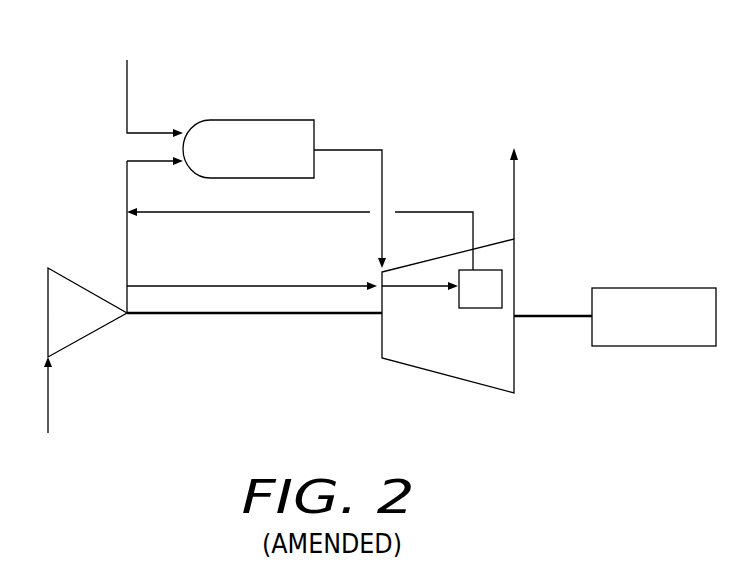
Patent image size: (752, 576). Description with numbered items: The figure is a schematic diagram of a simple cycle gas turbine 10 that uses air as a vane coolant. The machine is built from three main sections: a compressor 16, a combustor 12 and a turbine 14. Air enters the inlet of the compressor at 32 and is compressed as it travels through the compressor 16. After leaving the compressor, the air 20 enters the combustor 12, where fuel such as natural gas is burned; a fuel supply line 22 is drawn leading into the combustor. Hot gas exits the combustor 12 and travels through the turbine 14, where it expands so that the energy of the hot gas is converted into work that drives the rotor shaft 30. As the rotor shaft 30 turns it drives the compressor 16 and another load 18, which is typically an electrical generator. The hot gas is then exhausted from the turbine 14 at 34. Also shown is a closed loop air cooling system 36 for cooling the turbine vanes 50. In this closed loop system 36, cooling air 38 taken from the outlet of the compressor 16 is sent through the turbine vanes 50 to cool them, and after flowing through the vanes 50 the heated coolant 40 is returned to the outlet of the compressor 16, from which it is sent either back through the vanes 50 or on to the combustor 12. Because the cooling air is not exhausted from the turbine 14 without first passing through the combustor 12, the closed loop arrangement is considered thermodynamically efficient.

The simple cycle gas turbine 10 is at (348, 82).
The combustor 12 is at (248, 149).
The turbine 14 is at (465, 345).
The compressor 16 is at (87, 312).
The load 18 is at (654, 317).
The air 20 is at (127, 243).
The fuel inlet line 22 is at (147, 79).
The rotor shaft 30 is at (194, 316).
The compressor inlet 32 is at (48, 412).
The turbine exhaust 34 is at (537, 193).
The closed loop air cooling system 36 is at (288, 277).
The cooling air 38 is at (178, 286).
The heated coolant 40 is at (430, 212).
The turbine vanes 50 is at (470, 303).